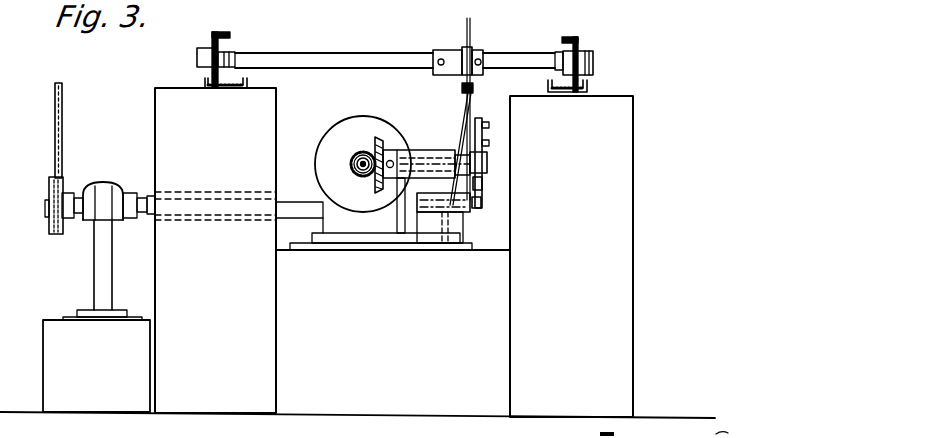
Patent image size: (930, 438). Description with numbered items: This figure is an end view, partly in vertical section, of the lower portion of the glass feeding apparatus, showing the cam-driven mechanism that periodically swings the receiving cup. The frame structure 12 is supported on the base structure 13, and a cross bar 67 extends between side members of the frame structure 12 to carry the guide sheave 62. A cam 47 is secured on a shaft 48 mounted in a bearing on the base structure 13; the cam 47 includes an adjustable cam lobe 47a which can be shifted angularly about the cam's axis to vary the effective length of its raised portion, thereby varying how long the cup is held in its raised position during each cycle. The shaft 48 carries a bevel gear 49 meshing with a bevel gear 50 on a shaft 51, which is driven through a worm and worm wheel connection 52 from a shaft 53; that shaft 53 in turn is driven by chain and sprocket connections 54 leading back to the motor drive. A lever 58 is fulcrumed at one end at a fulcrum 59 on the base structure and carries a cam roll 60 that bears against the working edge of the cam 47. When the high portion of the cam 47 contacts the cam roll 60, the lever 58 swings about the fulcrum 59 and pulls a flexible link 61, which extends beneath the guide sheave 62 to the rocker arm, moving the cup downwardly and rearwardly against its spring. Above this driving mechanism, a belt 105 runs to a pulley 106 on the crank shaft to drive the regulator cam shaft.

The frame structure 12 is at (211, 36).
The base structure 13 is at (393, 255).
The cam 47 is at (483, 187).
The adjustable cam lobe 47a is at (483, 133).
The shaft 48 is at (420, 157).
The bevel gear 49 is at (385, 143).
The bevel gear 50 is at (354, 165).
The shaft 51 is at (356, 161).
The worm and worm wheel connection 52 is at (360, 132).
The shaft 53 is at (148, 200).
The chain and sprocket connections 54 is at (60, 137).
The lever 58 is at (463, 108).
The fulcrum 59 is at (485, 203).
The cam roll 60 is at (487, 162).
The flexible link 61 is at (471, 21).
The guide sheave 62 is at (473, 45).
The cross bar 67 is at (312, 56).
The belt 105 is at (372, 0).
The pulley 106 is at (279, 2).